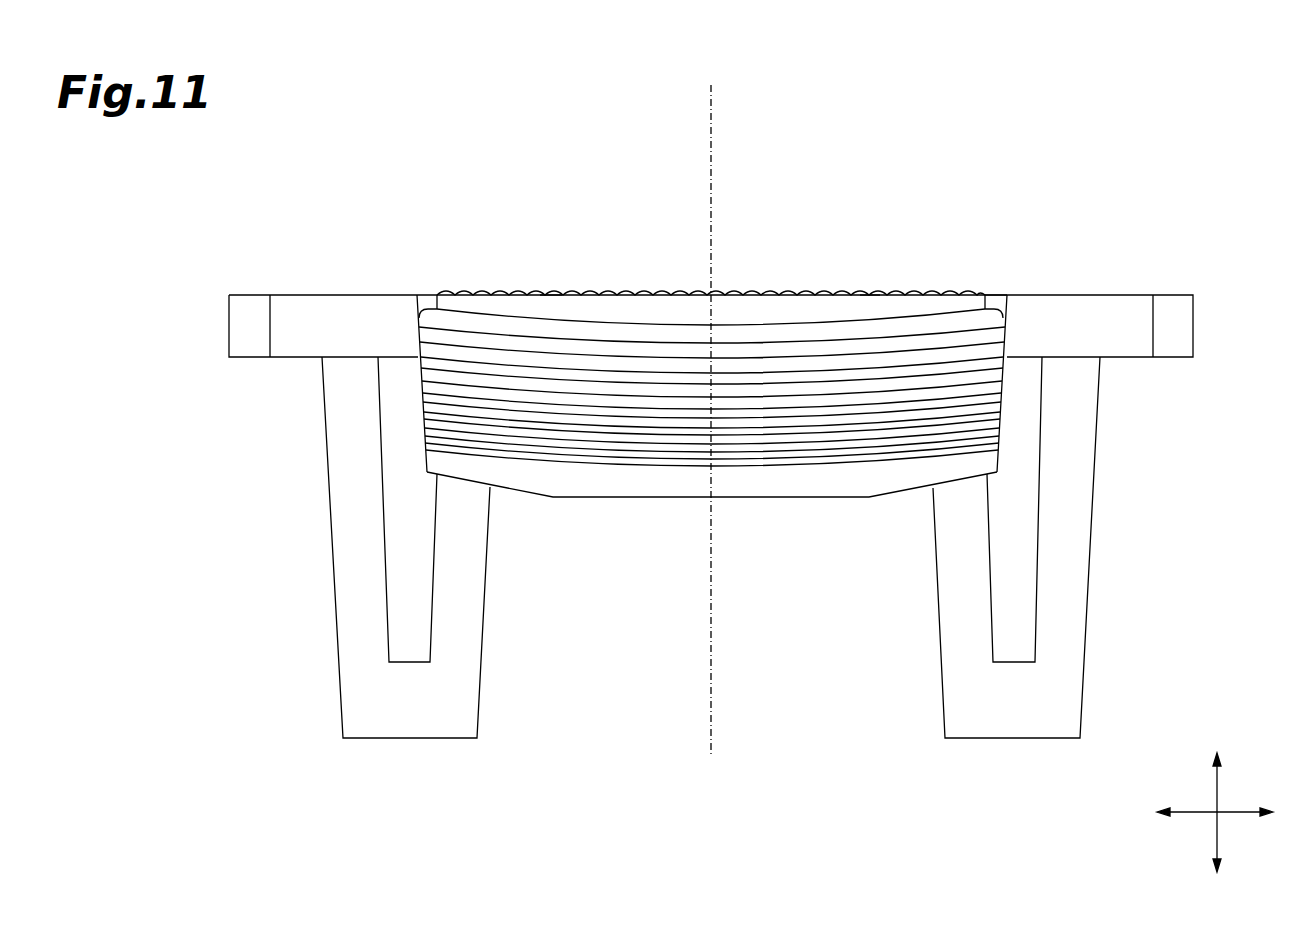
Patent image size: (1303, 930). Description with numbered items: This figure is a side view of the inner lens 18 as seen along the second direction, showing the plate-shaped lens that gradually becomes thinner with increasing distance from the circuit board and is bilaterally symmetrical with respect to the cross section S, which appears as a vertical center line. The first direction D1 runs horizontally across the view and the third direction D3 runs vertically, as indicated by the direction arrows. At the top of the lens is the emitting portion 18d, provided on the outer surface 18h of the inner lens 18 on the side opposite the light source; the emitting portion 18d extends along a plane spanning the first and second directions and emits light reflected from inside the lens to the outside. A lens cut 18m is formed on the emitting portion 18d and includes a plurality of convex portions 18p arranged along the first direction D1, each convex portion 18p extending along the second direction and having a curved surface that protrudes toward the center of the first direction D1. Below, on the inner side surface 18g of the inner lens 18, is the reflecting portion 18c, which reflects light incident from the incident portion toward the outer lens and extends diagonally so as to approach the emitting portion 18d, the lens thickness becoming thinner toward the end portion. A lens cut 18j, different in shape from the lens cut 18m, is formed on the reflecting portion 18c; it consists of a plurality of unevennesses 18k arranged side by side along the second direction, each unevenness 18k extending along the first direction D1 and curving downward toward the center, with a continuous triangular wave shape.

The inner lens 18 is at (1058, 224).
The convex portion 18p is at (551, 292).
The lens cut 18m is at (632, 291).
The emitting portion 18d is at (870, 292).
The outer surface 18h is at (997, 292).
The lens cut 18j is at (820, 395).
The unevenness 18k is at (963, 397).
The reflecting portion 18c is at (852, 460).
The inner side surface 18g is at (770, 480).
The cross section S is at (715, 722).
The first direction D1 is at (1198, 815).
The third direction D3 is at (1218, 788).